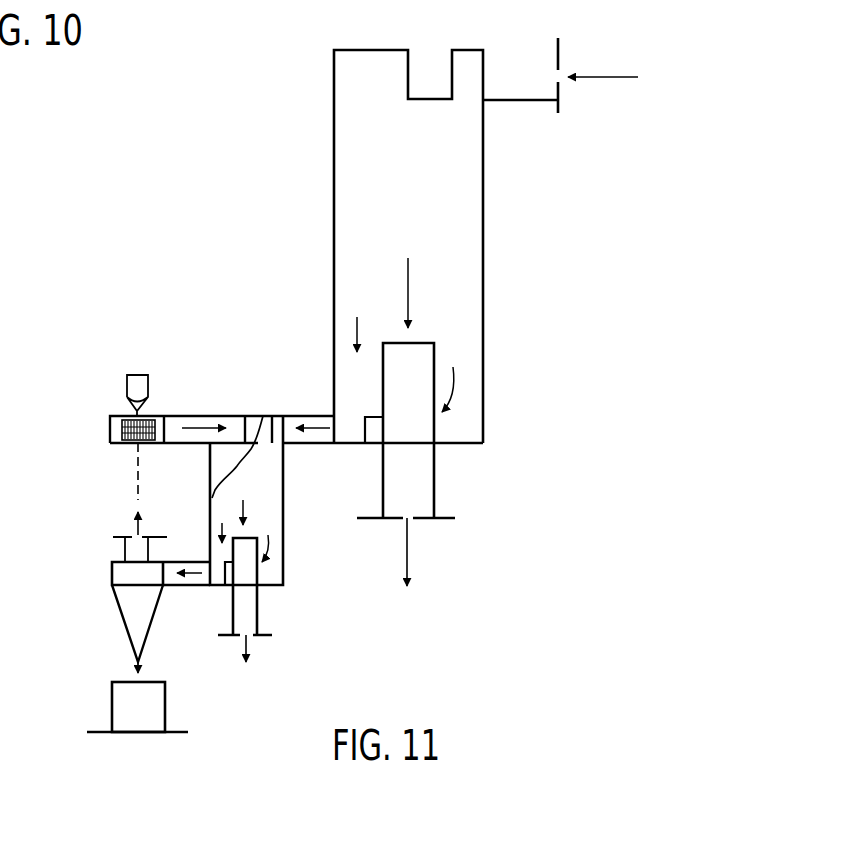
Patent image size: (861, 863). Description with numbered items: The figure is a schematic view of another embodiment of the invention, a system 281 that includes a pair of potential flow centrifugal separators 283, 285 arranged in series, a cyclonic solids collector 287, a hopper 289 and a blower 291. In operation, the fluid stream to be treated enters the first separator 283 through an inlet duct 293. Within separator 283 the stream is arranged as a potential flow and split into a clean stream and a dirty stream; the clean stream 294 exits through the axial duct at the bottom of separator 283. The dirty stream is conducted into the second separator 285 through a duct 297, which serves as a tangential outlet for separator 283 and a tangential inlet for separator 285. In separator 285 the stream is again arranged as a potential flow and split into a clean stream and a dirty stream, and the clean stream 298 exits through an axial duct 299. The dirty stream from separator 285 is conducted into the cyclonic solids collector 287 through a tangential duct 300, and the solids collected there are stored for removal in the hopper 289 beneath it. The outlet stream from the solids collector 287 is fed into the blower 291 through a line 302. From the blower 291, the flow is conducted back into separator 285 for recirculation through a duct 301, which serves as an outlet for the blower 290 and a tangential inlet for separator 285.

The system 281 is at (90, 754).
The potential flow centrifugal separator 283 is at (467, 260).
The potential flow centrifugal separator 285 is at (272, 492).
The cyclonic solids collector 287 is at (122, 608).
The hopper 289 is at (165, 717).
The blower 290 is at (585, 72).
The blower 291 is at (123, 428).
The inlet duct 293 is at (503, 54).
The clean stream 294 is at (410, 560).
The duct 297 is at (305, 416).
The clean stream 298 is at (245, 637).
The axial duct 299 is at (252, 597).
The tangential duct 300 is at (195, 585).
The duct 301 is at (197, 416).
The line 302 is at (137, 463).